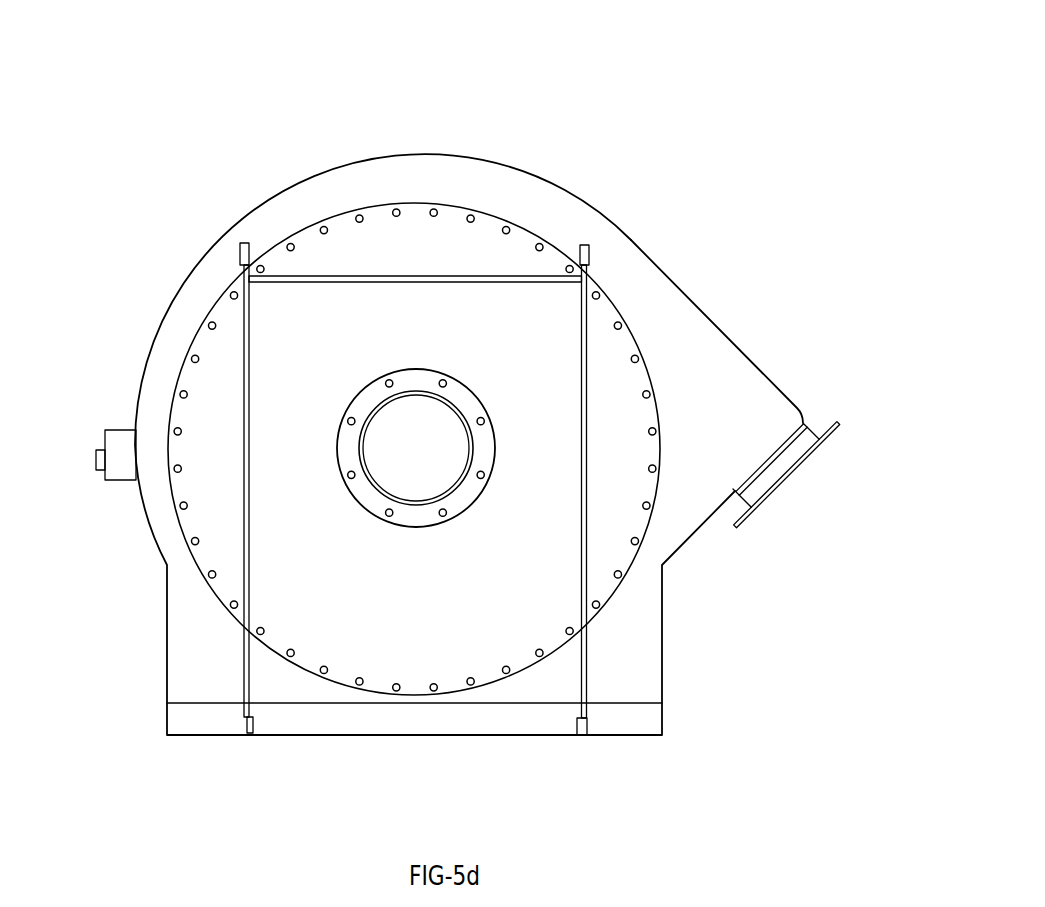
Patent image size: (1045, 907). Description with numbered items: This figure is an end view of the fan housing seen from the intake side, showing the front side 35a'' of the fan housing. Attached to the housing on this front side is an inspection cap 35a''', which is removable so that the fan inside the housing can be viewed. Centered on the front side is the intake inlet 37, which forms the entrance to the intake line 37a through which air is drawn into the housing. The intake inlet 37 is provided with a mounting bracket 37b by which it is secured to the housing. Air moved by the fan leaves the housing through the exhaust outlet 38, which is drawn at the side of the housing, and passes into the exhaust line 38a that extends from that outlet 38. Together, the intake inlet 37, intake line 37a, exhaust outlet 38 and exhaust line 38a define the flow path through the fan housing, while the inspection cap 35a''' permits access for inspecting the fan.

The front side of fan housing 35a'' is at (469, 374).
The inspection cap 35a''' is at (90, 506).
The intake inlet 37 is at (340, 470).
The intake line 37a is at (400, 470).
The mounting bracket 37b is at (367, 503).
The exhaust outlet 38 is at (777, 495).
The exhaust line 38a is at (768, 423).